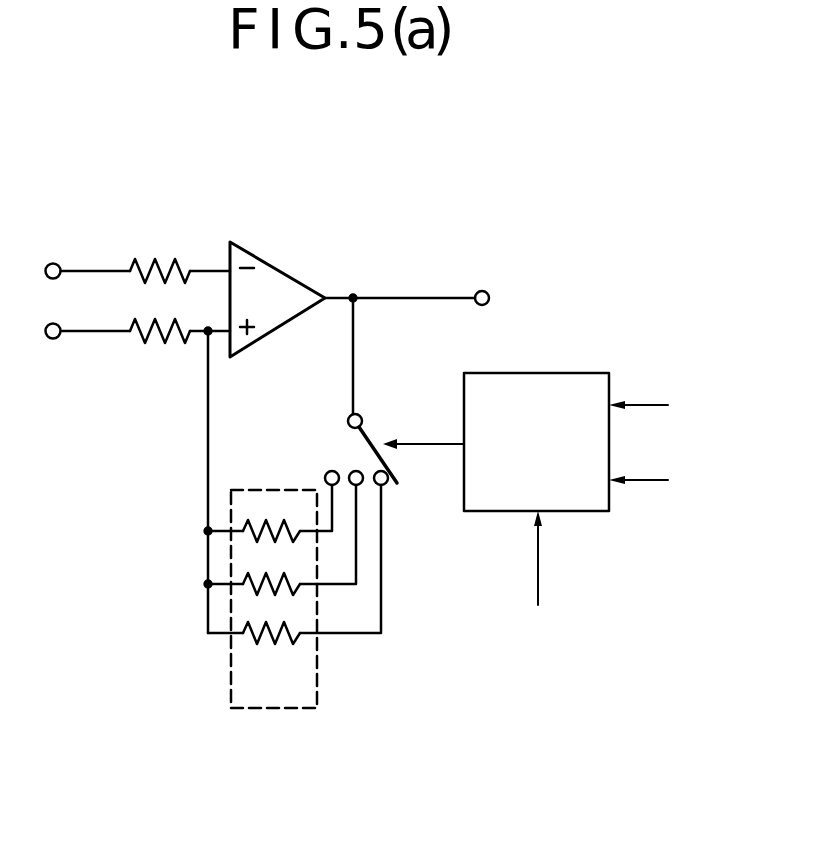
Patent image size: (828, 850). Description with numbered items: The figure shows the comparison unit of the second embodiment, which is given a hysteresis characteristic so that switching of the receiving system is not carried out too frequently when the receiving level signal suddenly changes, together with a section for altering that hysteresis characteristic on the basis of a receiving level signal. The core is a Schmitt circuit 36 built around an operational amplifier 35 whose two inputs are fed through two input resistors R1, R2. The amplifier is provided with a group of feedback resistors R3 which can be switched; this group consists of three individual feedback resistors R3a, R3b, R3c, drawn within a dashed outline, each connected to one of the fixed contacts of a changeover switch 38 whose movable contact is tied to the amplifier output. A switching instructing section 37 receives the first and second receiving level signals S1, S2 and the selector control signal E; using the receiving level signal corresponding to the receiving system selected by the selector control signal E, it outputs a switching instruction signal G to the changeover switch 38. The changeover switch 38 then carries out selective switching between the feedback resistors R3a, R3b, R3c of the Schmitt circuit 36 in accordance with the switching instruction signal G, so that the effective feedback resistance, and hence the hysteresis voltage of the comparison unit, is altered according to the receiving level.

The Schmitt circuit 36 is at (484, 174).
The operational amplifier 35 is at (277, 268).
The switching instructing section 37 is at (522, 372).
The changeover switch 38 is at (380, 432).
The input resistor R1 is at (166, 253).
The input resistor R2 is at (168, 343).
The group of feedback resistors R3 is at (265, 710).
The feedback resistor R3a is at (257, 532).
The feedback resistor R3b is at (248, 592).
The feedback resistor R3c is at (248, 648).
The switching instruction signal G is at (430, 446).
The first receiving level signal S1 is at (658, 400).
The second receiving level signal S2 is at (658, 480).
The selector control signal E is at (538, 578).